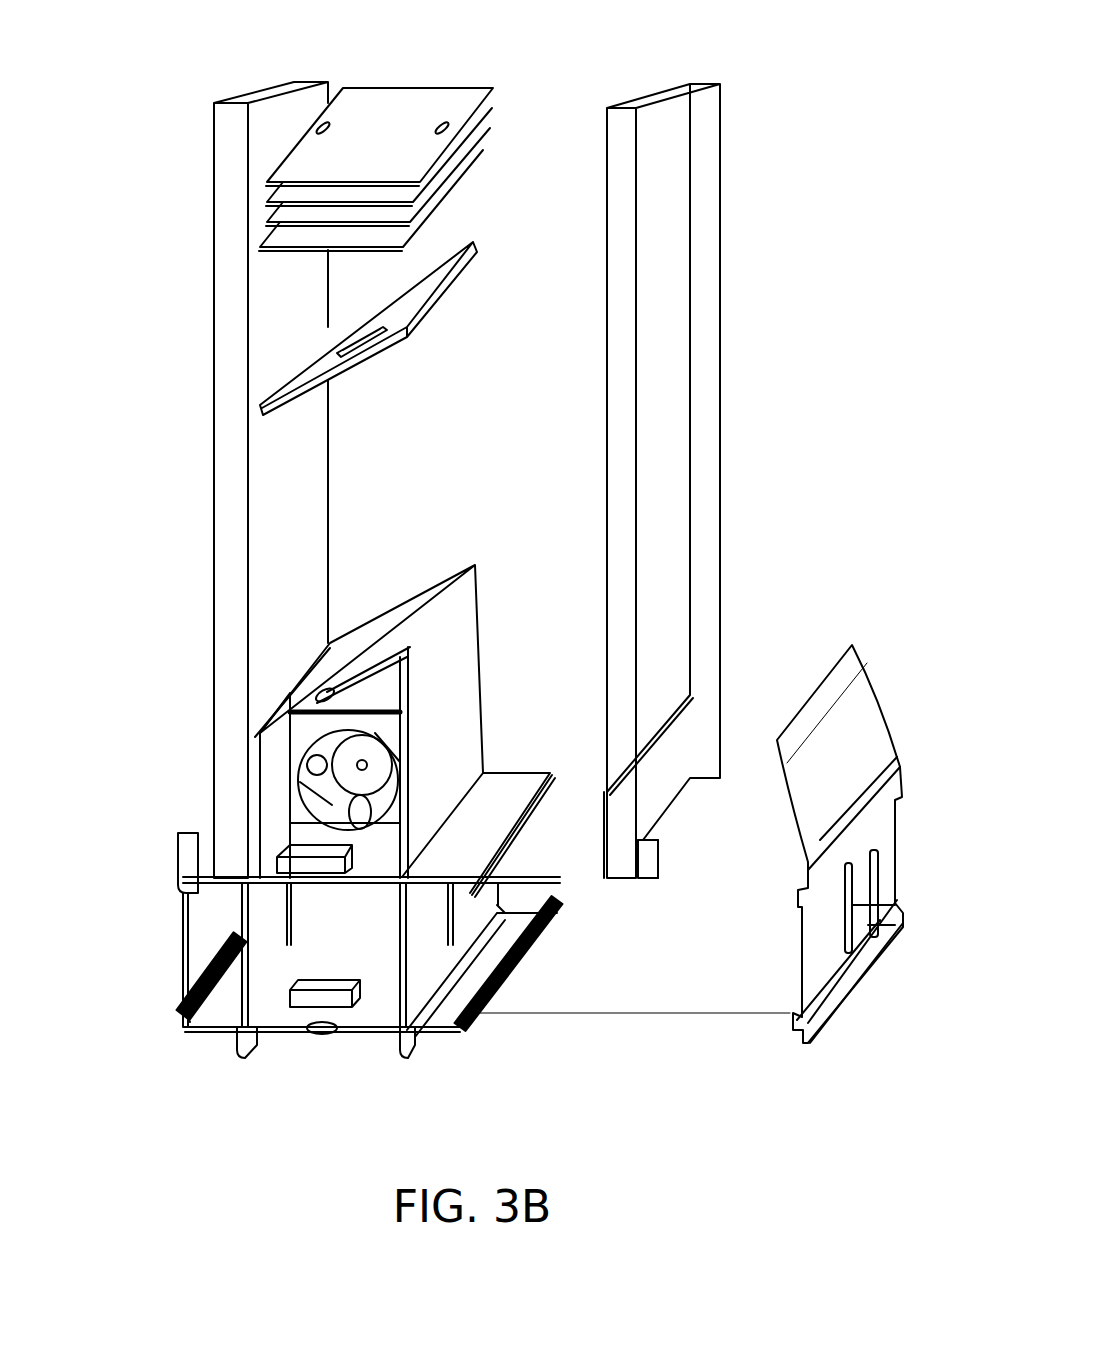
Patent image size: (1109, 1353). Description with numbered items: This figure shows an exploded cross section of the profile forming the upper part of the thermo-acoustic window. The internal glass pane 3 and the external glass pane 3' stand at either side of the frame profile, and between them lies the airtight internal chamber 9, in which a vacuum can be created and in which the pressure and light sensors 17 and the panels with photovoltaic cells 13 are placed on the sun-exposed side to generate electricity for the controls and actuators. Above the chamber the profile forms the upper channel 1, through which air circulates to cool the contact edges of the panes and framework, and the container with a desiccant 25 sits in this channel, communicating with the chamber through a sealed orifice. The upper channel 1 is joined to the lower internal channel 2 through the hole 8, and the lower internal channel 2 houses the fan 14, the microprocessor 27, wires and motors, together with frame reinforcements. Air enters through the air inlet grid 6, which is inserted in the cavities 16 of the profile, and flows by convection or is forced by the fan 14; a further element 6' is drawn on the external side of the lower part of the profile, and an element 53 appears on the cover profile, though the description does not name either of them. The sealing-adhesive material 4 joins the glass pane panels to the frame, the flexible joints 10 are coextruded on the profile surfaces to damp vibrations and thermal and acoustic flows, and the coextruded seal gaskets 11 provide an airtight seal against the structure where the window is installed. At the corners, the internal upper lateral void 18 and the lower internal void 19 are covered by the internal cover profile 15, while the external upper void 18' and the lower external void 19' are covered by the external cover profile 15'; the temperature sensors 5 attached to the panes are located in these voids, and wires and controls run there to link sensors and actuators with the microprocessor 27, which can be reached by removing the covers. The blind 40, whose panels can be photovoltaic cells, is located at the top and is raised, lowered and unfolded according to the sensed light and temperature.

The upper channel 1 is at (290, 733).
The lower internal channel 2 is at (340, 955).
The internal glass pane 3 is at (690, 481).
The external glass pane 3' is at (194, 480).
The sealing-adhesive material 4 is at (250, 790).
The temperature sensors 5 is at (193, 853).
The air inlet grid 6 is at (895, 906).
The guide rail 6' is at (174, 966).
The hole 8 is at (350, 824).
The airtight internal chamber 9 is at (385, 580).
The flexible joints 10 is at (316, 694).
The coextruded seal gaskets 11 is at (250, 1060).
The panels with photovoltaic cells 13 is at (330, 328).
The fan 14 is at (358, 768).
The internal cover profile 15 is at (883, 844).
The external cover profile 15' is at (439, 957).
The cavities 16 is at (878, 880).
The pressure and light sensors 17 is at (360, 350).
The internal upper lateral void 18 is at (492, 994).
The external upper void 18' is at (171, 1046).
The lower internal void 19 is at (453, 933).
The lower external void 19' is at (222, 771).
The container with a desiccant 25 is at (293, 843).
The microprocessor 27 is at (365, 997).
The blind 40 is at (290, 157).
The slot 53 is at (895, 925).